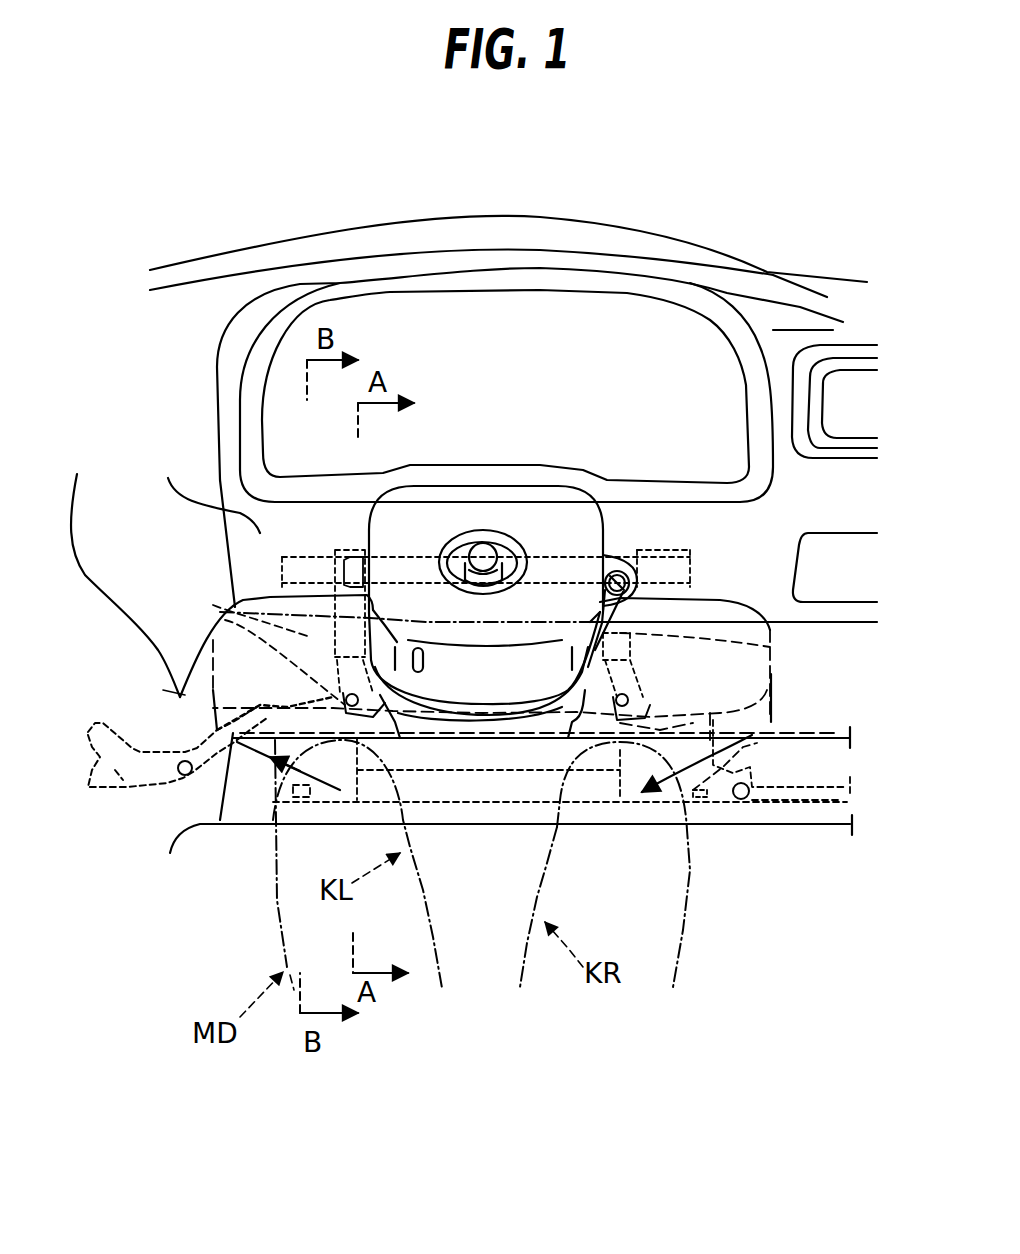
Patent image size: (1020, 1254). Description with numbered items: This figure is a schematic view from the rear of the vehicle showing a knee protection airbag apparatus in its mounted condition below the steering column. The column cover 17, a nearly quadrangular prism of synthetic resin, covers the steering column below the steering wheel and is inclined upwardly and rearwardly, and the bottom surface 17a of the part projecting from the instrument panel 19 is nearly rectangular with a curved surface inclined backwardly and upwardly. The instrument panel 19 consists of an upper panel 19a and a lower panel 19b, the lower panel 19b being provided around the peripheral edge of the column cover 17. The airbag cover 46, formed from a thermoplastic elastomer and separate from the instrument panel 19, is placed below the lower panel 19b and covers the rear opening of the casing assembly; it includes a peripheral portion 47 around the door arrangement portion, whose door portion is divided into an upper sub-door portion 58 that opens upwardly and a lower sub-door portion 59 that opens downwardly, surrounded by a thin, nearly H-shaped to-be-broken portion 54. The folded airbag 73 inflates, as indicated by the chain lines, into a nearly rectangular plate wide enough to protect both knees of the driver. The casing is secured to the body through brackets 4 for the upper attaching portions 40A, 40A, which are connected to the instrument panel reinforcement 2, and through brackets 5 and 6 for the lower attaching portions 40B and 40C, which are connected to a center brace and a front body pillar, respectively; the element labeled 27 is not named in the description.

The instrument panel reinforcement 2 is at (661, 575).
The bracket 4 is at (228, 600).
The bracket 5 is at (100, 795).
The bracket 6 is at (840, 838).
The column cover 17 is at (510, 497).
The bottom surface 17a is at (447, 660).
The instrument panel 19 is at (200, 447).
The upper panel 19a is at (203, 488).
The lower panel 19b is at (120, 570).
The inflator 27 is at (767, 763).
The upper attaching portion 40A is at (225, 620).
The lower attaching portion 40B is at (218, 758).
The lower attaching portion 40C is at (745, 812).
The airbag cover 46 is at (252, 832).
The peripheral portion 47 is at (643, 807).
The to-be-broken portion 54 is at (448, 770).
The upper sub-door portion 58 is at (510, 757).
The lower sub-door portion 59 is at (478, 783).
The airbag 73 is at (772, 676).